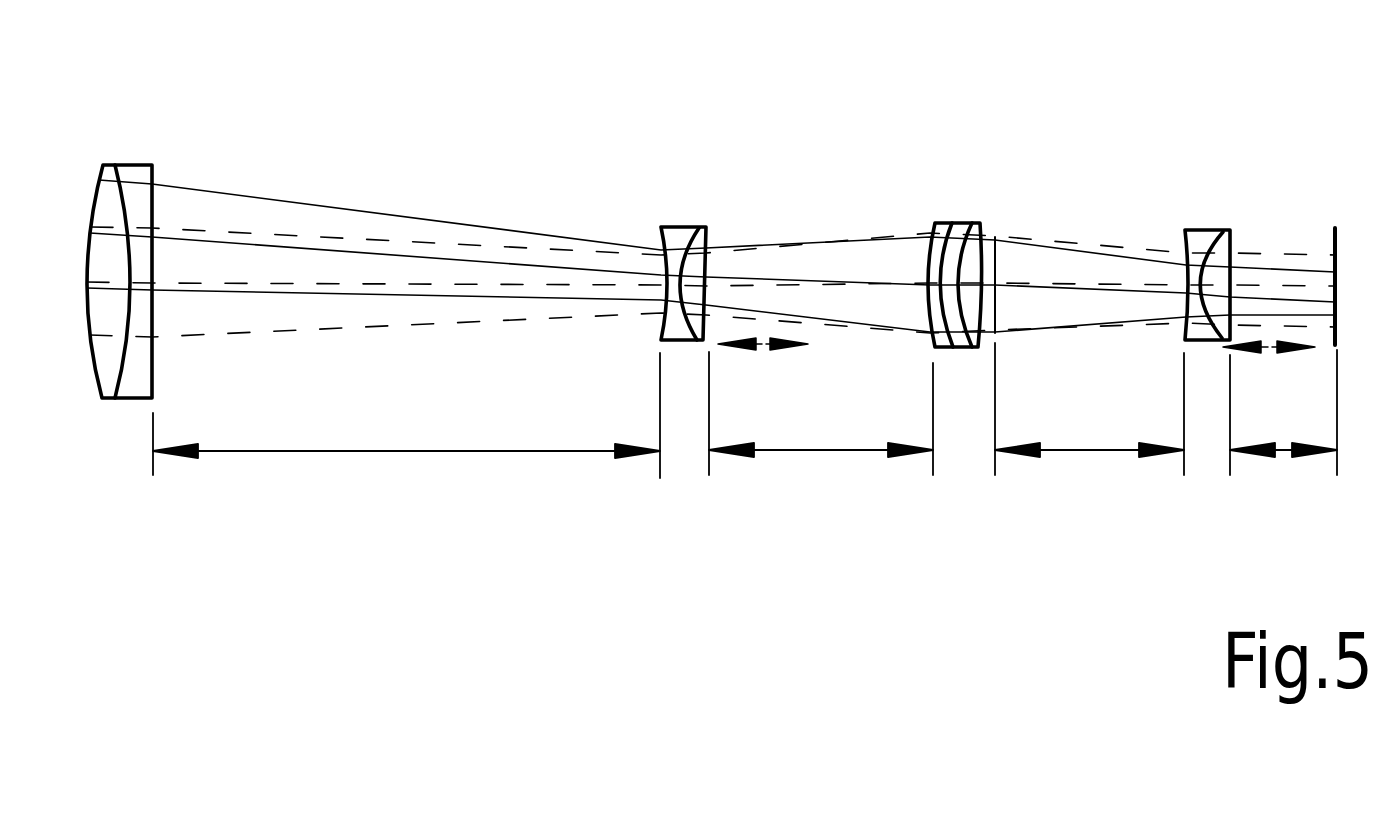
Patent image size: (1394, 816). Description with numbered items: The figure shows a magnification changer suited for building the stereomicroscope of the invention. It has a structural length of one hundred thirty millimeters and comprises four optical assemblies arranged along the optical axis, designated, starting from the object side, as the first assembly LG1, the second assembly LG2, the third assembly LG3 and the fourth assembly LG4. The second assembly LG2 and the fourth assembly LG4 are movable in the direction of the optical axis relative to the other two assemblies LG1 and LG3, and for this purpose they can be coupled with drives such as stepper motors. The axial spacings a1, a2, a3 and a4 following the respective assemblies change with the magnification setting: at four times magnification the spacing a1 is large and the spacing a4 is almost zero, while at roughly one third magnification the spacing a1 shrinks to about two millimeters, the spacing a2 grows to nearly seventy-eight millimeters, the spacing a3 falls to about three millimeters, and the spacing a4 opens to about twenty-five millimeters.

The first optical assembly LG1 is at (130, 162).
The second optical assembly LG2 is at (683, 225).
The third optical assembly LG3 is at (962, 223).
The fourth optical assembly LG4 is at (1205, 228).
The air distance a1 is at (406, 415).
The air distance a2 is at (821, 413).
The air distance a3 is at (1089, 409).
The air distance a4 is at (1283, 412).